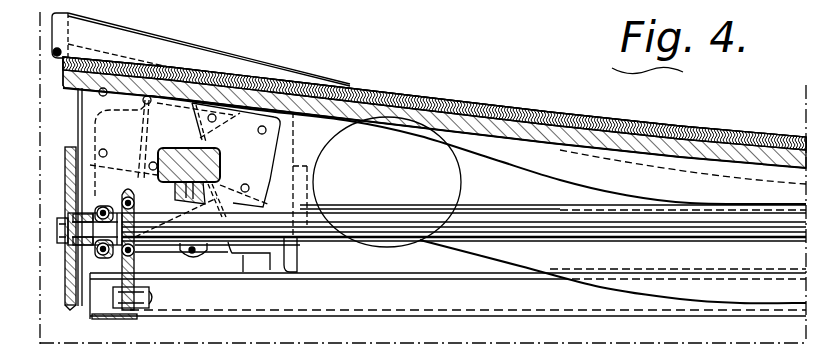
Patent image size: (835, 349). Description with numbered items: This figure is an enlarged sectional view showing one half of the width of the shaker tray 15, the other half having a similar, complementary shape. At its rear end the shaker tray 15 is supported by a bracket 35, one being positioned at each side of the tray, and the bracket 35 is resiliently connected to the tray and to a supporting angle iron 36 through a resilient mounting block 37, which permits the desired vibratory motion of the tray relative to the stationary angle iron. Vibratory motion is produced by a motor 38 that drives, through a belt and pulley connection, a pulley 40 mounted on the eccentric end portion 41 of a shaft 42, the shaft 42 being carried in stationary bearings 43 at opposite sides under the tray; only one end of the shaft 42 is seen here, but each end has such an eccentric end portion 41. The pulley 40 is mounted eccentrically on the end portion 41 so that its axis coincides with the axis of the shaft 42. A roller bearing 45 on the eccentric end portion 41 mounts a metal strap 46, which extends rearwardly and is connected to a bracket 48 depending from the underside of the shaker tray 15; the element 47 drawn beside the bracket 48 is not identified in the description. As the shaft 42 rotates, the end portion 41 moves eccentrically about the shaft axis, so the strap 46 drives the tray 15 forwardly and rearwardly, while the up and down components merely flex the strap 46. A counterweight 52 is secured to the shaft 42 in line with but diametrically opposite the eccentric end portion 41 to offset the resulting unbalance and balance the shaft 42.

The shaker tray 15 is at (562, 113).
The bracket 35 is at (278, 69).
The supporting angle iron 36 is at (322, 274).
The resilient mounting block 37 is at (249, 267).
The motor 38 is at (298, 260).
The pulley 40 is at (65, 172).
The eccentric end portion 41 is at (70, 278).
The shaft 42 is at (489, 226).
The stationary bearing 43 is at (134, 256).
The roller bearing 45 is at (94, 315).
The strap 46 is at (96, 207).
The disc 47 is at (279, 142).
The bracket 48 is at (309, 170).
The counterweight 52 is at (221, 158).